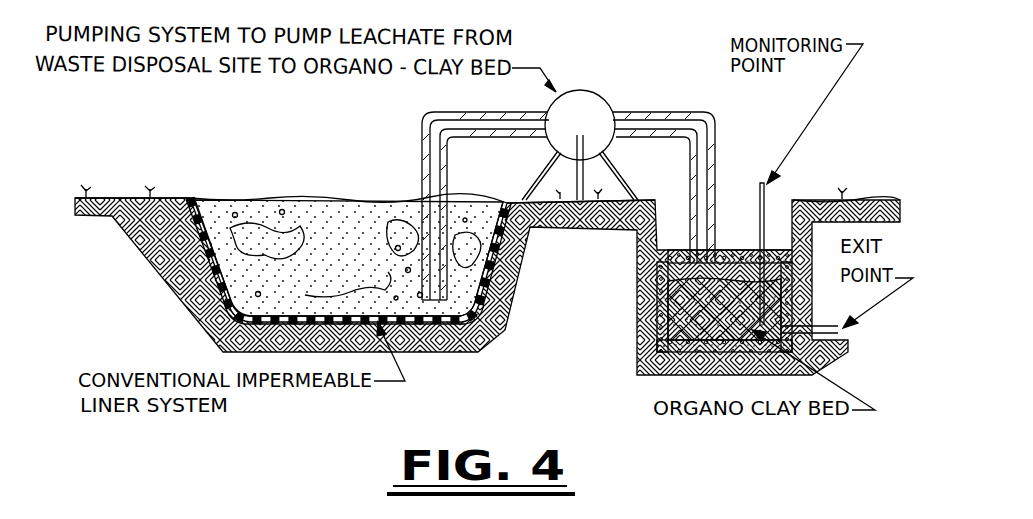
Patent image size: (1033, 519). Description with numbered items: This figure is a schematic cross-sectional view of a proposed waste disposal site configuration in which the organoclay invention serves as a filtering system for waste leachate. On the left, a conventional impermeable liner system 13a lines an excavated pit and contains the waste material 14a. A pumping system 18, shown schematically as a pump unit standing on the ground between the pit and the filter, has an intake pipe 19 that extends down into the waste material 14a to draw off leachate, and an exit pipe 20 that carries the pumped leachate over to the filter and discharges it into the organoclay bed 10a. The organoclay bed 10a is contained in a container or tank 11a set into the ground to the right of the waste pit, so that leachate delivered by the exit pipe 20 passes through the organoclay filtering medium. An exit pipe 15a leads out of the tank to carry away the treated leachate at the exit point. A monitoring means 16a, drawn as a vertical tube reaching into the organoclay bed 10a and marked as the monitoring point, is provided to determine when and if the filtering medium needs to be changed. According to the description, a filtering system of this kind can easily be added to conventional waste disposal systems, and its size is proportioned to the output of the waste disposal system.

The organoclay bed 10a is at (735, 278).
The container or tank 11a is at (663, 252).
The conventional impermeable liner system 13a is at (190, 198).
The waste material 14a is at (327, 200).
The exit pipe 15a is at (790, 343).
The monitoring means 16a is at (764, 190).
The pumping system 18 is at (594, 90).
The intake pipe 19 is at (422, 143).
The exit pipe 20 is at (668, 113).